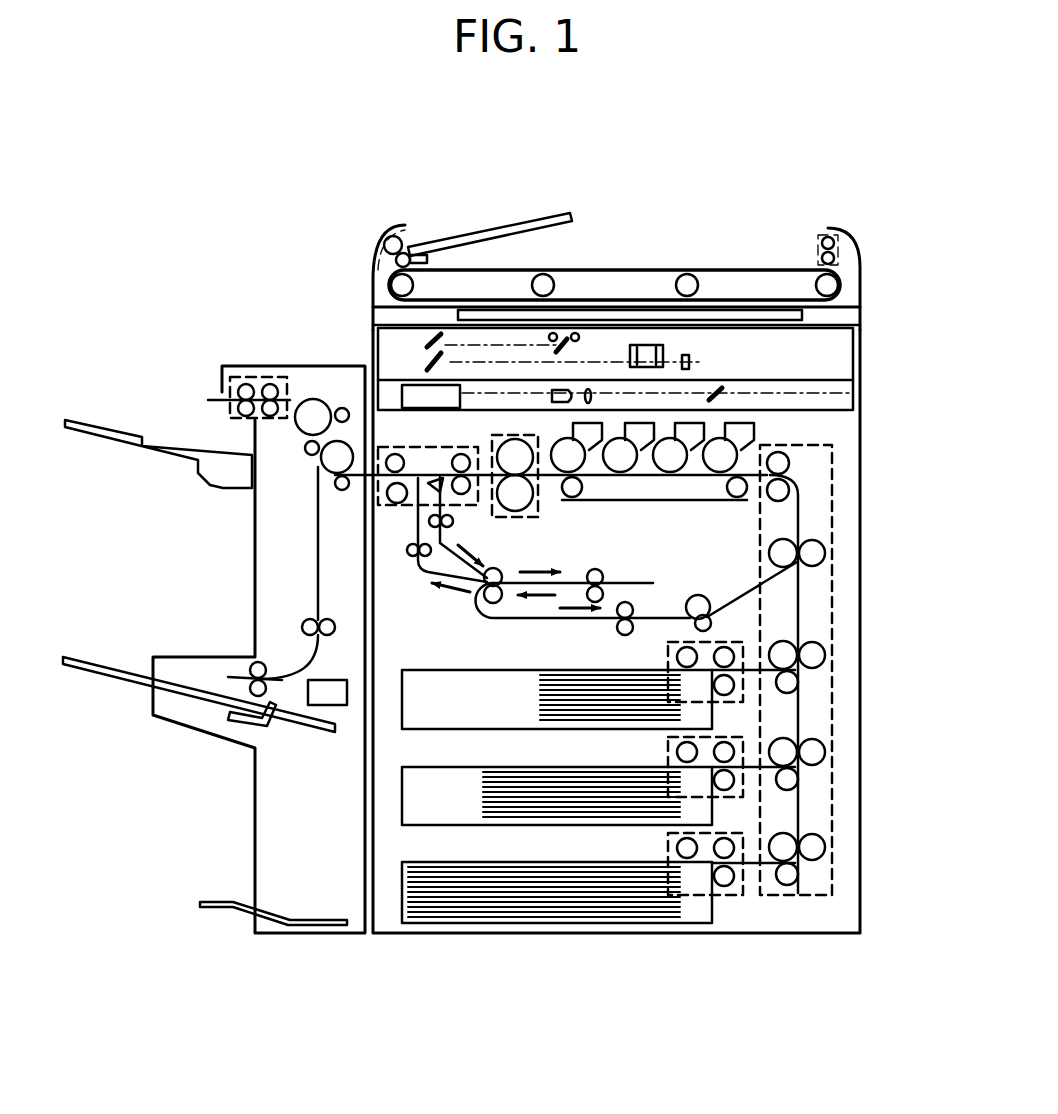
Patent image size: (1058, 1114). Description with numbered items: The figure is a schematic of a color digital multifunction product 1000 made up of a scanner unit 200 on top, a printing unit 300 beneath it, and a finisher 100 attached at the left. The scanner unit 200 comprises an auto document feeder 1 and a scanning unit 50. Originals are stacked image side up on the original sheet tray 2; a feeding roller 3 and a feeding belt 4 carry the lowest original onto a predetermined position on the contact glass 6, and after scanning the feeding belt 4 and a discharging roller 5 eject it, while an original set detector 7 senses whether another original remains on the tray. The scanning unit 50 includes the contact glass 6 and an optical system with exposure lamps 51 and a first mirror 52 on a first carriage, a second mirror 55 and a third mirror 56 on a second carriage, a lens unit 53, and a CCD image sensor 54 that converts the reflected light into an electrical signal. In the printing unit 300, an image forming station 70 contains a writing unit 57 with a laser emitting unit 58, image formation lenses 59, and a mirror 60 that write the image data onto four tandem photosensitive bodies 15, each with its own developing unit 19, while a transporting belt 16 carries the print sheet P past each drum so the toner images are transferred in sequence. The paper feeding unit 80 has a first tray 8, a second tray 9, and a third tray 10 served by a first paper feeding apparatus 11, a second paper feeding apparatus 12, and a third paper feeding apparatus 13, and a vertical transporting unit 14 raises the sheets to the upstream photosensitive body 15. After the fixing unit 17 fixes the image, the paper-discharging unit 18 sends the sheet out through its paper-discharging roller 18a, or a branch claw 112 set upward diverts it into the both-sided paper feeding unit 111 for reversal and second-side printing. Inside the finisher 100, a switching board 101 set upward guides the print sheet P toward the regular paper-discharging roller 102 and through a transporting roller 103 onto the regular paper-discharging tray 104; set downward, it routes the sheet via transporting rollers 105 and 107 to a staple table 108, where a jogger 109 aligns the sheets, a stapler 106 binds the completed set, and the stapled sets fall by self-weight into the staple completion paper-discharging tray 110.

The color digital multifunction product 1000 is at (797, 181).
The auto document feeder 1 is at (862, 285).
The scanner unit 200 is at (873, 240).
The printing unit 300 is at (880, 573).
The finisher 100 is at (253, 843).
The original sheet tray 2 is at (537, 220).
The feeding roller 3 is at (413, 225).
The feeding belt 4 is at (618, 300).
The discharging roller 5 is at (818, 252).
The contact glass 6 is at (805, 315).
The original set detector 7 is at (428, 258).
The scanning unit 50 is at (850, 360).
The exposure lamps 51 is at (553, 332).
The first mirror 52 is at (570, 347).
The lens unit 53 is at (660, 355).
The CCD image sensor 54 is at (690, 362).
The second mirror 55 is at (428, 338).
The third mirror 56 is at (425, 360).
The writing unit 57 is at (850, 395).
The laser emitting unit 58 is at (402, 395).
The image formation lenses 59 is at (562, 398).
The mirror 60 is at (725, 395).
The first tray 8 is at (428, 725).
The second tray 9 is at (428, 820).
The third tray 10 is at (447, 903).
The first paper feeding apparatus 11 is at (765, 700).
The second paper feeding apparatus 12 is at (760, 795).
The third paper feeding apparatus 13 is at (735, 893).
The vertical transporting unit 14 is at (838, 490).
The photosensitive bodies 15 is at (565, 470).
The transporting belt 16 is at (705, 500).
The fixing unit 17 is at (512, 517).
The paper-discharging unit 18 is at (462, 505).
The paper-discharging roller 18a is at (380, 505).
The developing units 19 is at (592, 450).
The image forming station 70 is at (685, 508).
The paper feeding unit 80 is at (842, 652).
The both-sided paper feeding unit 111 is at (527, 622).
The branch claw 112 is at (425, 520).
The print sheet P is at (578, 672).
The switching board 101 is at (323, 457).
The regular paper-discharging roller 102 is at (297, 423).
The transporting roller 103 is at (238, 376).
The regular paper-discharging tray 104 is at (105, 420).
The transporting roller 105 is at (308, 620).
The stapler 106 is at (325, 680).
The transporting roller 107 is at (265, 663).
The staple table 108 is at (87, 660).
The jogger 109 is at (268, 727).
The staple completion paper-discharging tray 110 is at (210, 902).